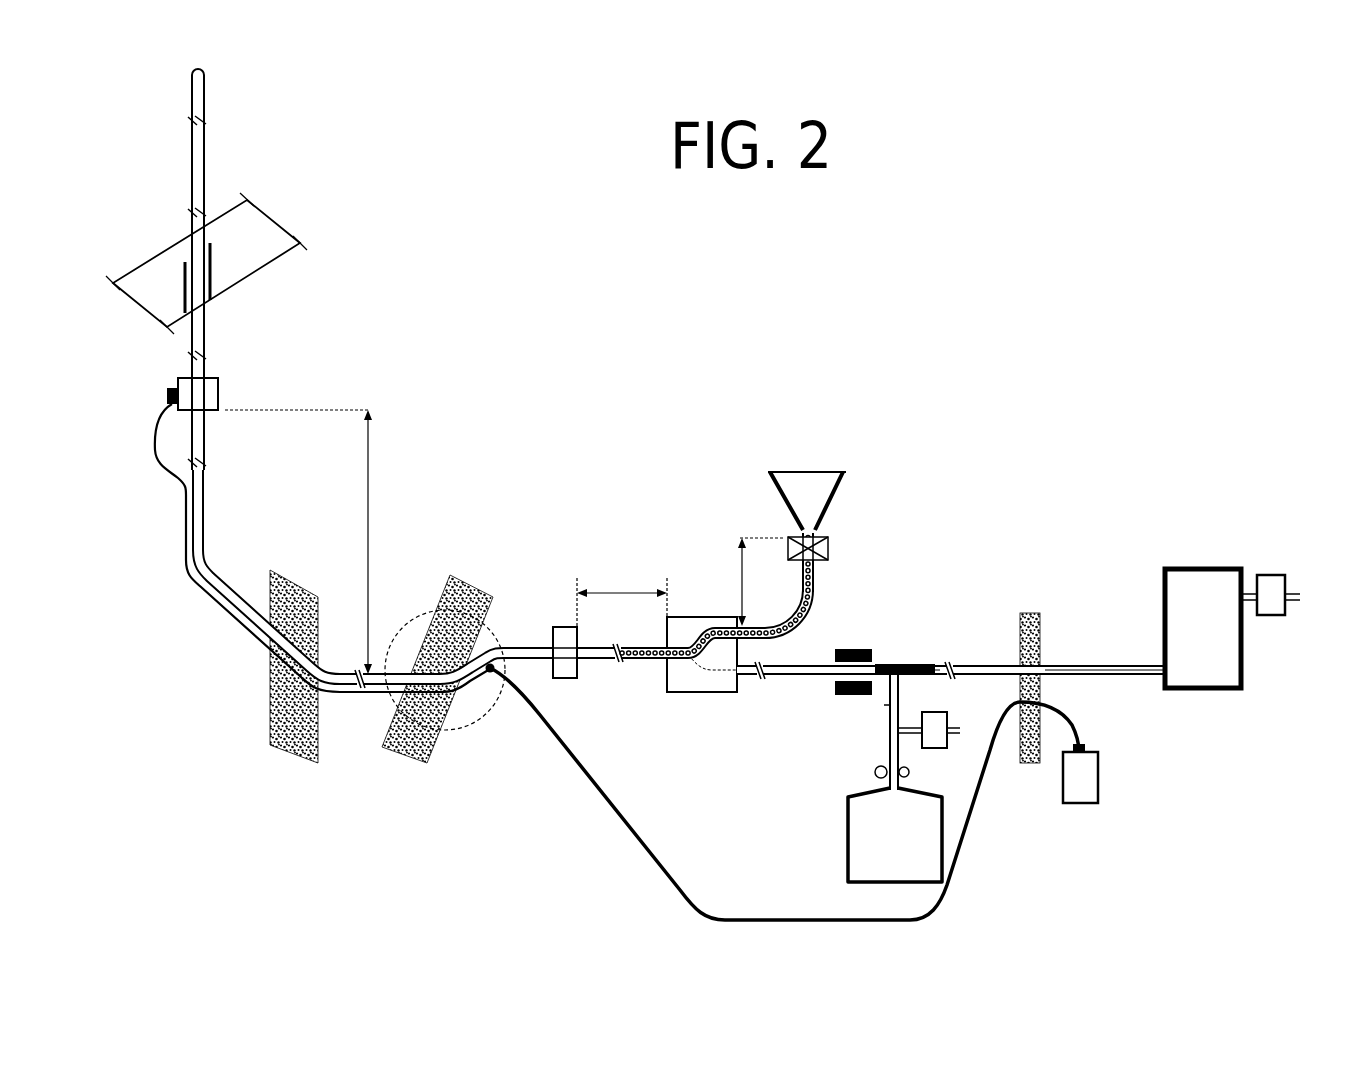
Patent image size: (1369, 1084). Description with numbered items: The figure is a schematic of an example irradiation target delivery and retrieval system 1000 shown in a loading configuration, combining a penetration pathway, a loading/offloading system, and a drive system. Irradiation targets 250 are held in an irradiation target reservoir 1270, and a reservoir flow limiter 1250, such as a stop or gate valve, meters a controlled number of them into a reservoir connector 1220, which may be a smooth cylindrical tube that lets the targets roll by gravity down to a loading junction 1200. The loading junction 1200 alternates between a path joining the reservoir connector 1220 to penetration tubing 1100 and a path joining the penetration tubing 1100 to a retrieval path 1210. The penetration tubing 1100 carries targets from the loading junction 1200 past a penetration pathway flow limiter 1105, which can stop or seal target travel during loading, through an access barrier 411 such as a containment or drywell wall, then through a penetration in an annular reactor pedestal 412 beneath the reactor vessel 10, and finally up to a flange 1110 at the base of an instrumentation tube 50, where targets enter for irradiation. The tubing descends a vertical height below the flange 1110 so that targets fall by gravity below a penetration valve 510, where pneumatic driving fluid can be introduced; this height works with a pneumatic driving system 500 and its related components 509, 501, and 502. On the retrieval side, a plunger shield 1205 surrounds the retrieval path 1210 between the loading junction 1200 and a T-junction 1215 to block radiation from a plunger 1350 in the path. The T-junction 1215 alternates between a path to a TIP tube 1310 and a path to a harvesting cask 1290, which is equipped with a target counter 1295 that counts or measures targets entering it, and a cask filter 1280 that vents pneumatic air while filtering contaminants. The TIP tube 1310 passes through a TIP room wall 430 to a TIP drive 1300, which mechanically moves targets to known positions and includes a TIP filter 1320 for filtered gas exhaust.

The irradiation target delivery and retrieval system 1000 is at (562, 330).
The instrumentation tube 50 is at (192, 190).
The reactor vessel 10 is at (280, 262).
The penetration valve 510 is at (167, 392).
The flange 1110 is at (220, 390).
The pneumatic driving system component 509 is at (184, 548).
The penetration tubing 1100 is at (212, 515).
The annular reactor pedestal 412 is at (270, 712).
The access barrier 411 is at (403, 753).
The pneumatic driving system 500 is at (472, 740).
The penetration pathway flow limiter 1105 is at (567, 682).
The loading junction 1200 is at (722, 693).
The irradiation targets 250 is at (800, 608).
The reservoir connector 1220 is at (814, 578).
The reservoir flow limiter 1250 is at (830, 546).
The irradiation target reservoir 1270 is at (770, 492).
The retrieval path 1210 is at (793, 677).
The TIP tube 1310 is at (1093, 665).
The plunger 1350 is at (920, 666).
The plunger shield 1205 is at (853, 696).
The T-junction 1215 is at (893, 662).
The cask filter 1280 is at (934, 712).
The target counter 1295 is at (873, 770).
The harvesting cask 1290 is at (845, 850).
The TIP drive 1300 is at (1200, 567).
The TIP filter 1320 is at (1277, 575).
The pneumatic driving system component 502 is at (967, 865).
The pneumatic driving system component 501 is at (1100, 778).
The TIP room wall 430 is at (1028, 612).